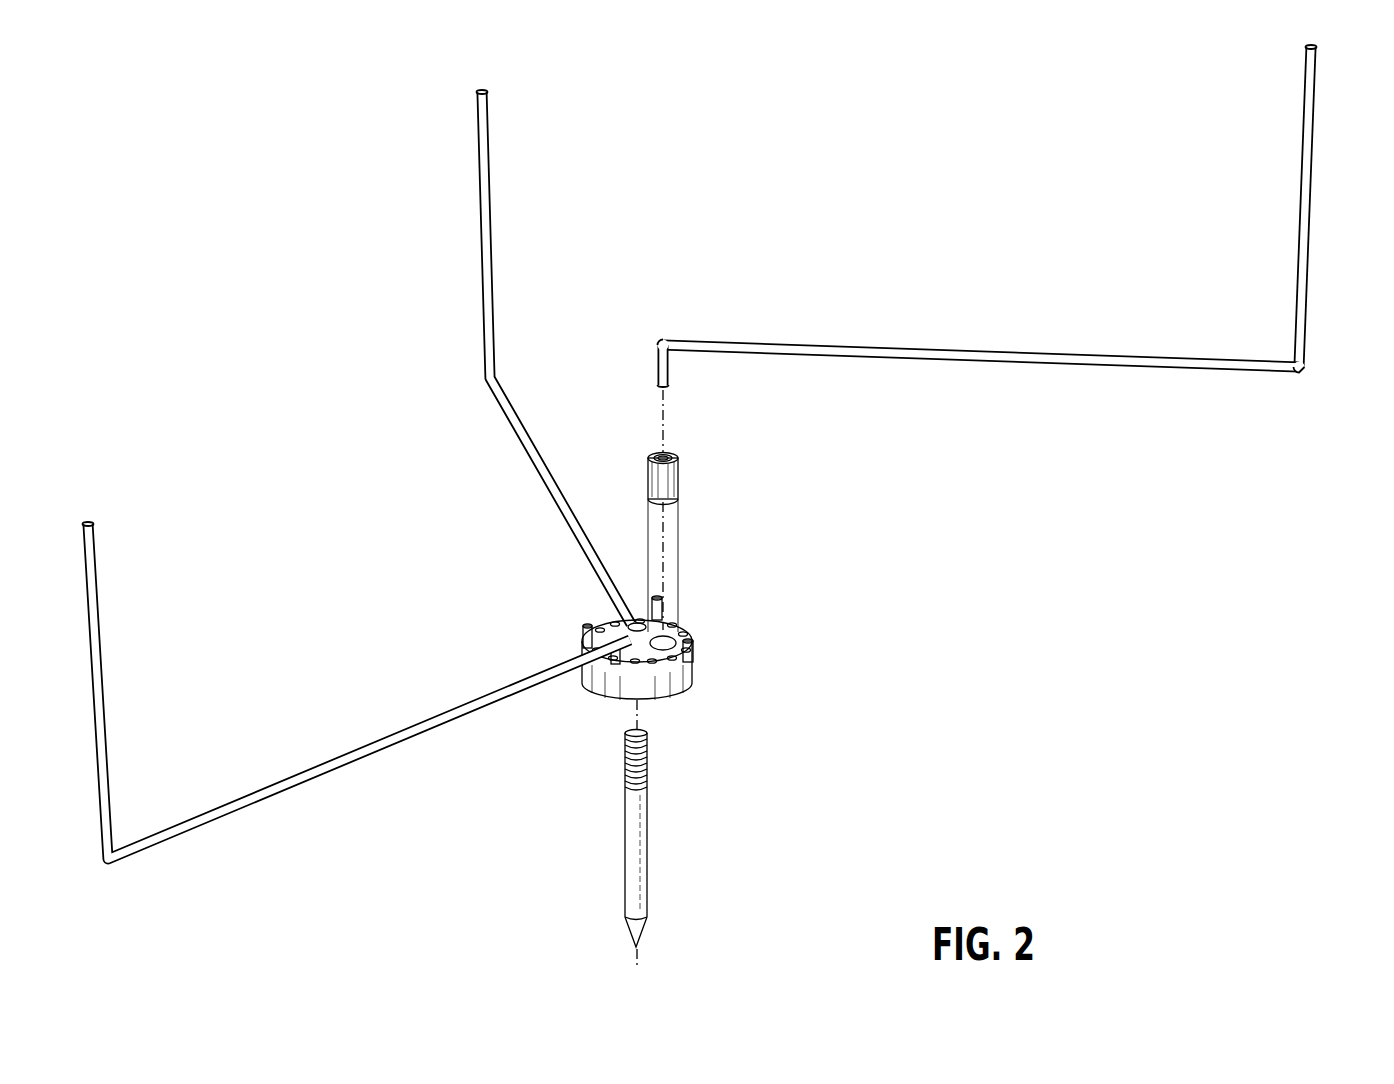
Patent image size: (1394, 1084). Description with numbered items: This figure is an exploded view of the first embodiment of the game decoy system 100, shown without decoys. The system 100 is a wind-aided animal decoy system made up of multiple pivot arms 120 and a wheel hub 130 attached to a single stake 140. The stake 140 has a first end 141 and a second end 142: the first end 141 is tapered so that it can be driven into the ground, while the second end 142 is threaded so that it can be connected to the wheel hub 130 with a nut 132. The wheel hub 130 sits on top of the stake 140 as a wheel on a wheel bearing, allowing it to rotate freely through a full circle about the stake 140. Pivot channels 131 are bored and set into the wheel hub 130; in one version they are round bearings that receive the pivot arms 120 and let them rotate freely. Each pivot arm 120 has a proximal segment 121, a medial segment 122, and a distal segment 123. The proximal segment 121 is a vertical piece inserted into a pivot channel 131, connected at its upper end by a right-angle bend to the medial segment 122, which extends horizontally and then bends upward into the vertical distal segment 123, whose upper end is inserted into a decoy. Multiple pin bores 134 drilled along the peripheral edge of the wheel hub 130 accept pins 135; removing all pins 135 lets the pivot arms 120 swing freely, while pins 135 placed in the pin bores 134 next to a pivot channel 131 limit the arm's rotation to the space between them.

The game decoy system 100 is at (735, 506).
The pivot arm 120 is at (982, 216).
The proximal segment 121 is at (657, 358).
The medial segment 122 is at (982, 352).
The distal segment 123 is at (1303, 130).
The wheel hub 130 is at (649, 546).
The pivot channel 131 is at (676, 455).
The nut 132 is at (584, 636).
The pin bore 134 is at (688, 639).
The pin 135 is at (660, 598).
The stake 140 is at (642, 848).
The first end 141 is at (676, 941).
The second end 142 is at (645, 760).